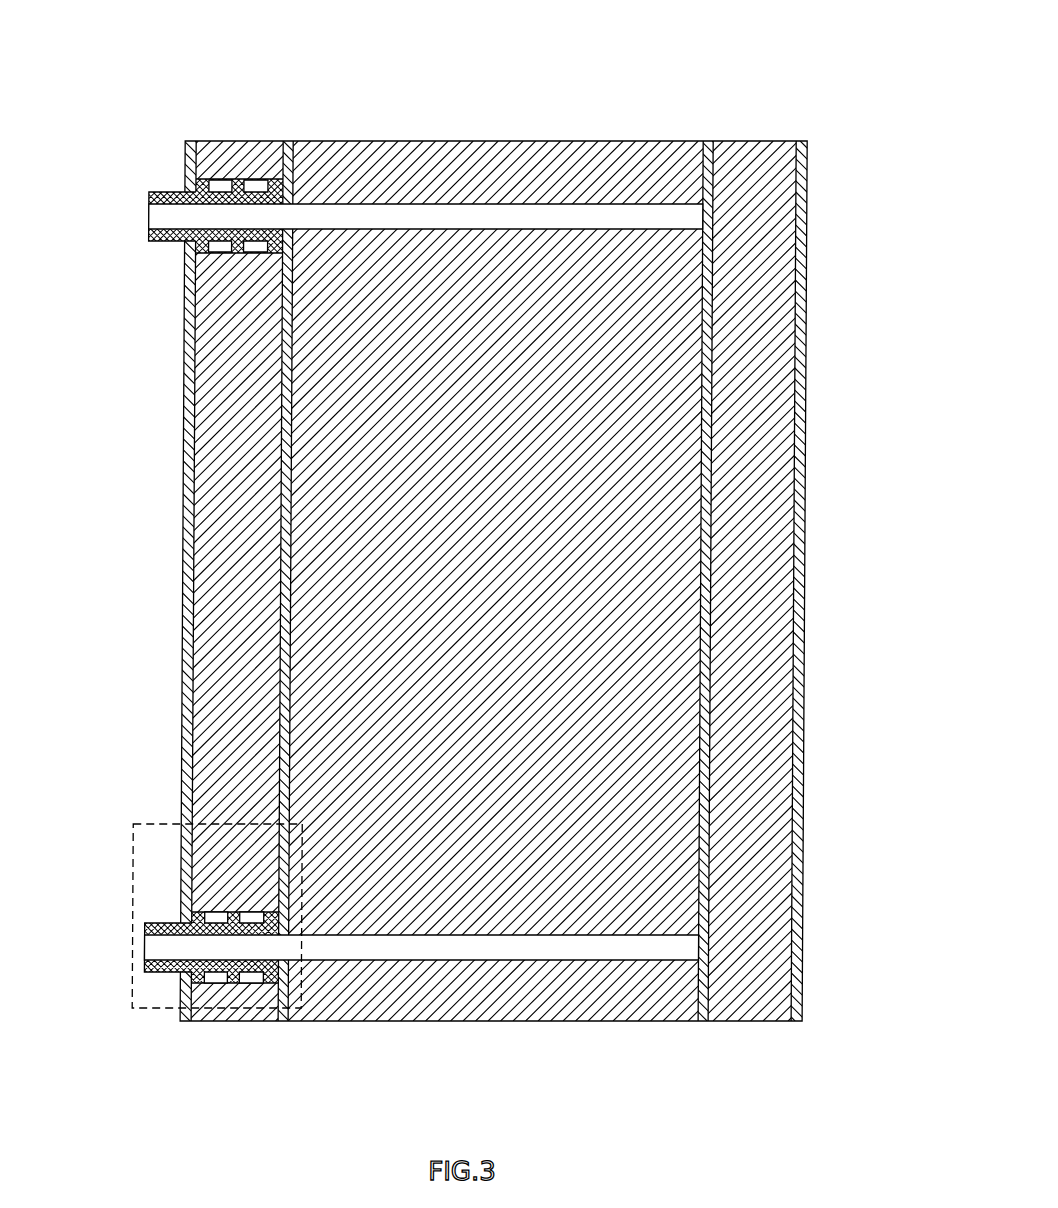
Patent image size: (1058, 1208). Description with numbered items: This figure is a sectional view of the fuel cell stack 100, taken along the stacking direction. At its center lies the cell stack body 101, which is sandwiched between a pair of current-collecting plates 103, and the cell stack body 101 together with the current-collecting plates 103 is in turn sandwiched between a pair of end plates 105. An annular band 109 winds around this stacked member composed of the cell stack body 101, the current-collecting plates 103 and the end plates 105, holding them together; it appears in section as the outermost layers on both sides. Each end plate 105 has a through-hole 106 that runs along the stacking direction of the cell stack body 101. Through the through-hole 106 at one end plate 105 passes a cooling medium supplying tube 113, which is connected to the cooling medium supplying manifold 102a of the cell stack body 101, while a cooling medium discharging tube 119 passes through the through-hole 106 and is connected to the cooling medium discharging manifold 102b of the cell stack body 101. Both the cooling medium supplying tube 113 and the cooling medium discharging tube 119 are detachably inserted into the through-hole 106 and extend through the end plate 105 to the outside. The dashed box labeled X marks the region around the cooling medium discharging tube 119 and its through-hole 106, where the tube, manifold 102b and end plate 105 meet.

The fuel cell stack 100 is at (718, 62).
The cell stack body 101 is at (692, 125).
The cooling medium supplying manifold 102a is at (691, 219).
The cooling medium discharging manifold 102b is at (499, 953).
The current-collecting plate 103 is at (290, 1021).
The end plate 105 is at (230, 558).
The through-hole 106 is at (216, 246).
The annular band 109 is at (185, 741).
The cooling medium supplying tube 113 is at (234, 180).
The cooling medium discharging tube 119 is at (247, 984).
The detail region X is at (138, 1008).